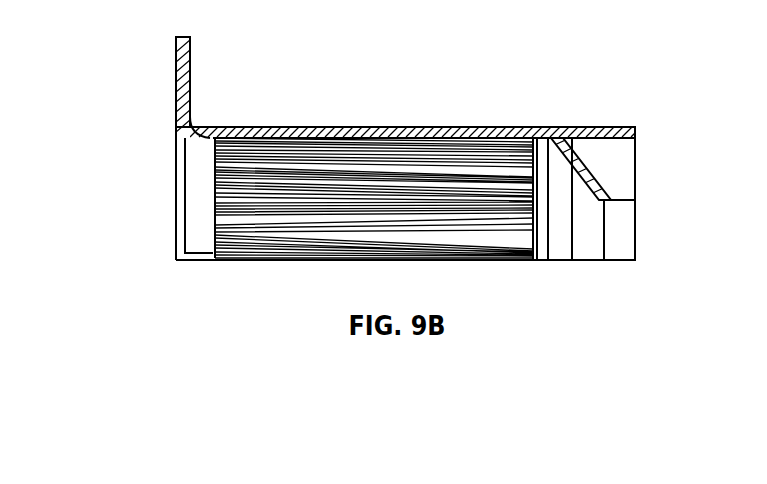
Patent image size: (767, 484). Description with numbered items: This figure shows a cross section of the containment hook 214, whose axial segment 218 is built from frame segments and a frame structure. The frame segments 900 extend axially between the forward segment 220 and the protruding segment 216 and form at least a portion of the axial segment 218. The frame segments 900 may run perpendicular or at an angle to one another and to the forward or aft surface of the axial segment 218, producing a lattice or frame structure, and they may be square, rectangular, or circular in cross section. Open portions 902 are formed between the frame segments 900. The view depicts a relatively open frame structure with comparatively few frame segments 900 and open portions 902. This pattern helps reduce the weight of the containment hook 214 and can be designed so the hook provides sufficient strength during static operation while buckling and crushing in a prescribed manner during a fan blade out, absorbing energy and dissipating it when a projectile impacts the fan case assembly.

The forward segment 220 is at (183, 73).
The axial segment 218 is at (280, 128).
The protruding segment 216 is at (592, 170).
The containment hook 214 is at (550, 278).
The frame segments 900 is at (275, 227).
The open portions 902 is at (362, 240).